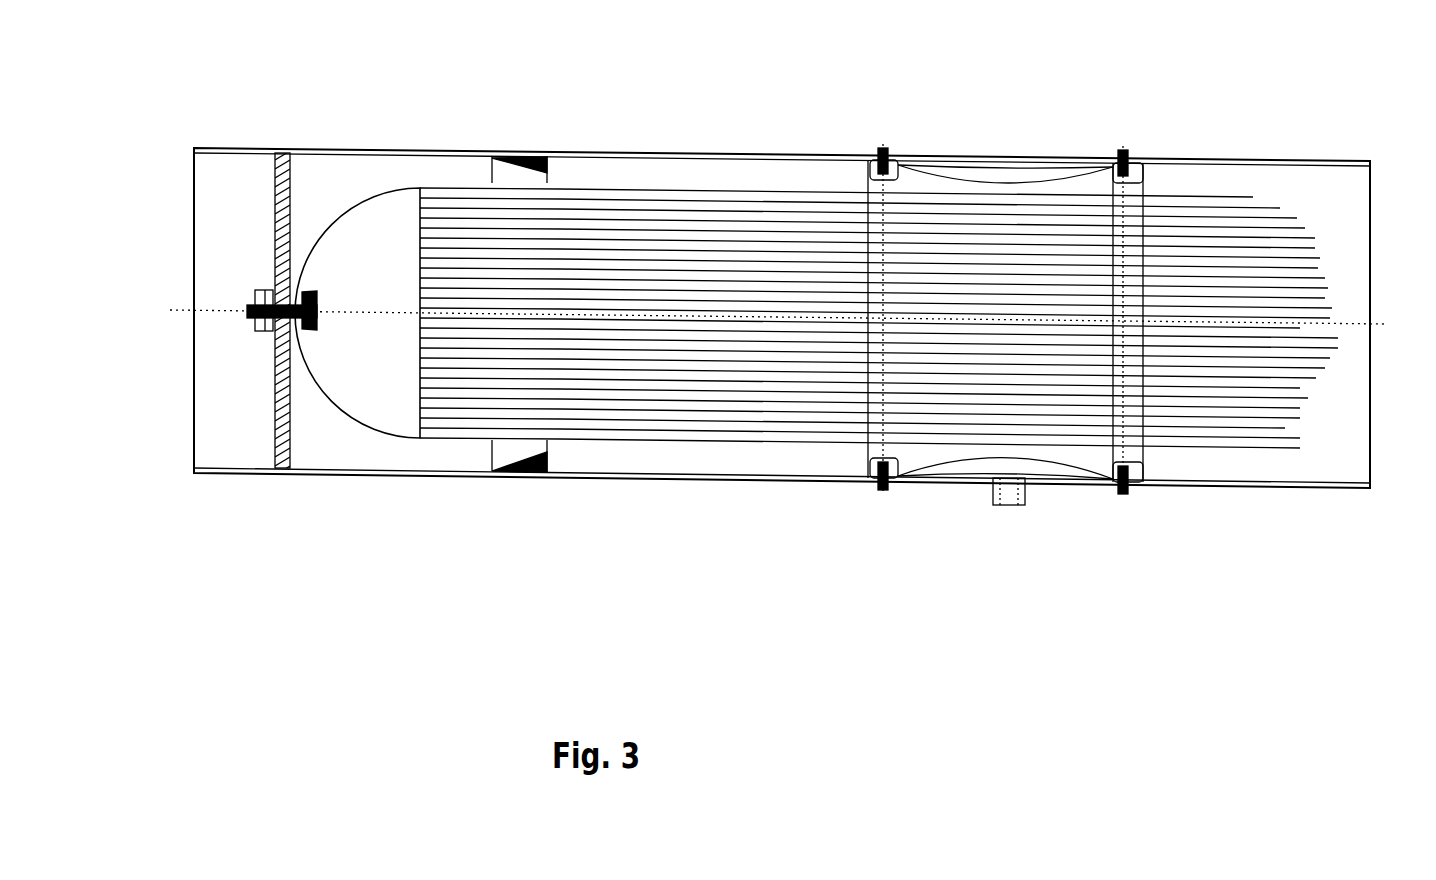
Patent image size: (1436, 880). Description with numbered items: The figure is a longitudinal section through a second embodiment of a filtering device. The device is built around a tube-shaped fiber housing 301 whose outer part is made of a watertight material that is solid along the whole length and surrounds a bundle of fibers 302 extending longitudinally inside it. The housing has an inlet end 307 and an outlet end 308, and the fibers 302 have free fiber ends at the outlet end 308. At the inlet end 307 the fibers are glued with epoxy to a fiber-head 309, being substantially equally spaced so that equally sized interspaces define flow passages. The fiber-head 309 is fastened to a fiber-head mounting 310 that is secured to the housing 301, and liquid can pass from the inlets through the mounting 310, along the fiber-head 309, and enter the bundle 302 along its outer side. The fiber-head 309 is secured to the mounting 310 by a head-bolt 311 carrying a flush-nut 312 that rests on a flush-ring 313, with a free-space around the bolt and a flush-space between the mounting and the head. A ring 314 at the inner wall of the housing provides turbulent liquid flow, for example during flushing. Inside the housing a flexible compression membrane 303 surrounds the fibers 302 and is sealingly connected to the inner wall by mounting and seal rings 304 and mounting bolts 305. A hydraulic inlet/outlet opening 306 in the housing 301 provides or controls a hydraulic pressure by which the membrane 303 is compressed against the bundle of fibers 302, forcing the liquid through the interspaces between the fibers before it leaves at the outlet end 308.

The fiber housing 301 is at (1233, 157).
The bundle of fibers 302 is at (683, 175).
The compression membrane 303 is at (996, 162).
The mounting and seal rings 304 is at (1137, 158).
The mounting bolts 305 is at (882, 150).
The hydraulic inlet/outlet opening 306 is at (1005, 510).
The inlet end 307 is at (170, 195).
The outlet end 308 is at (1378, 443).
The fiber-head 309 is at (378, 220).
The fiber-head mounting 310 is at (282, 148).
The head-bolt 311 is at (247, 308).
The flush-nut 312 is at (255, 326).
The flush-ring 313 is at (266, 340).
The ring 314 is at (550, 168).